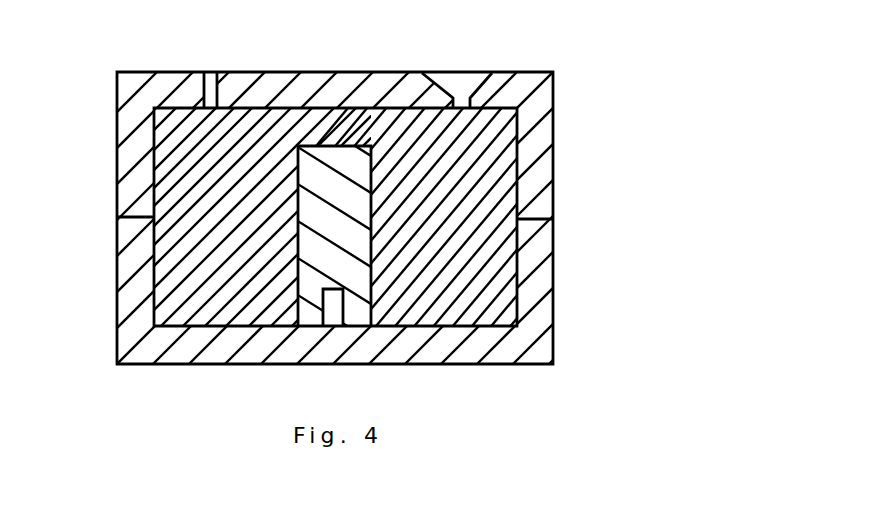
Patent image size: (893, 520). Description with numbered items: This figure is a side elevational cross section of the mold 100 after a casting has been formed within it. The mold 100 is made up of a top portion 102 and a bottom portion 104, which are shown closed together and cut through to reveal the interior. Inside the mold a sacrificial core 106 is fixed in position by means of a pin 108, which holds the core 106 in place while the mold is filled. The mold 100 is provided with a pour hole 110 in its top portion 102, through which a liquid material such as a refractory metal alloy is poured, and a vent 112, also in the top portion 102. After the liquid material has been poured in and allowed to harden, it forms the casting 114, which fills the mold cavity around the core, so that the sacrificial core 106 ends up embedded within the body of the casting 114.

The mold 100 is at (384, 206).
The top portion 102 is at (553, 134).
The bottom portion 104 is at (555, 352).
The sacrificial core 106 is at (299, 182).
The pin 108 is at (343, 291).
The pour hole 110 is at (485, 72).
The vent 112 is at (214, 72).
The casting 114 is at (484, 282).